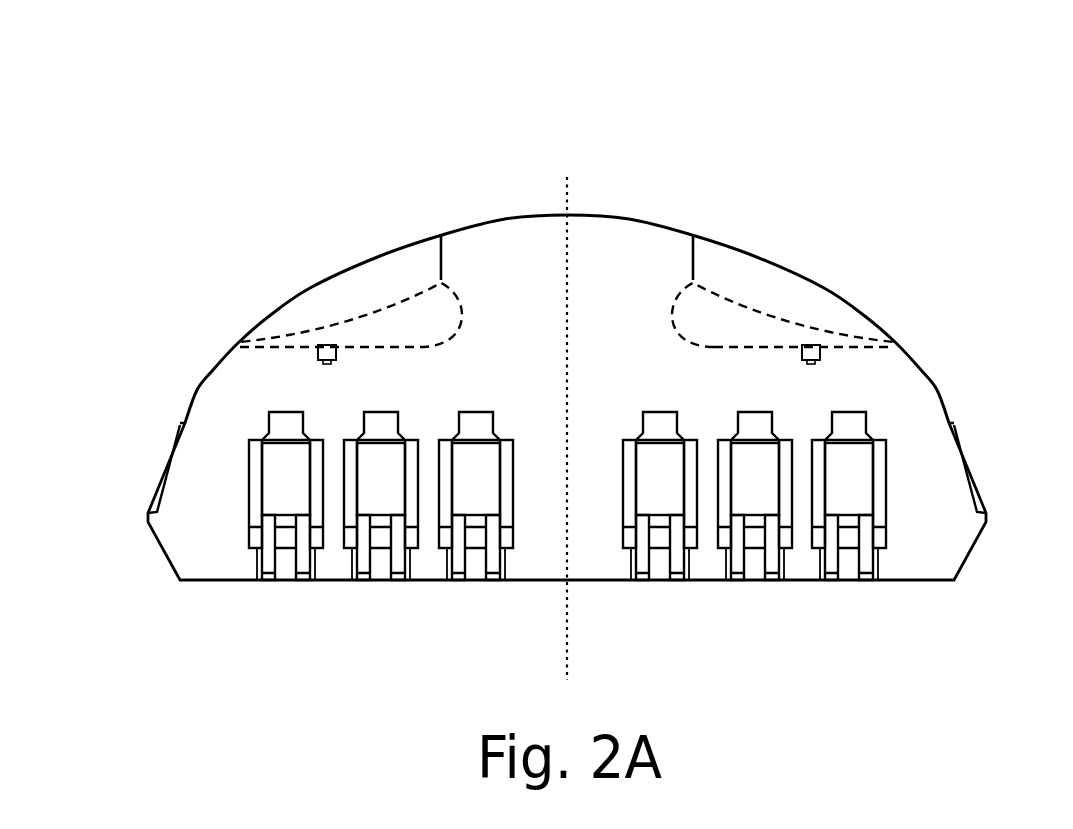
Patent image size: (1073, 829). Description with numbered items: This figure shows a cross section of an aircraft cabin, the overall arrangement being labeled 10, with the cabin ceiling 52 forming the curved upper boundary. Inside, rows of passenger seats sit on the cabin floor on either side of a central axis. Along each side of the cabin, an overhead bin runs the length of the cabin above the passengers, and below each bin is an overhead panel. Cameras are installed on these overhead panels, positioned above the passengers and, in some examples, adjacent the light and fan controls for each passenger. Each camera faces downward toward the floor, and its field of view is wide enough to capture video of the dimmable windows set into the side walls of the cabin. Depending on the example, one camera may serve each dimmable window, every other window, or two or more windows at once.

The aircraft cabin 10 is at (210, 130).
The cabin ceiling 52 is at (603, 215).